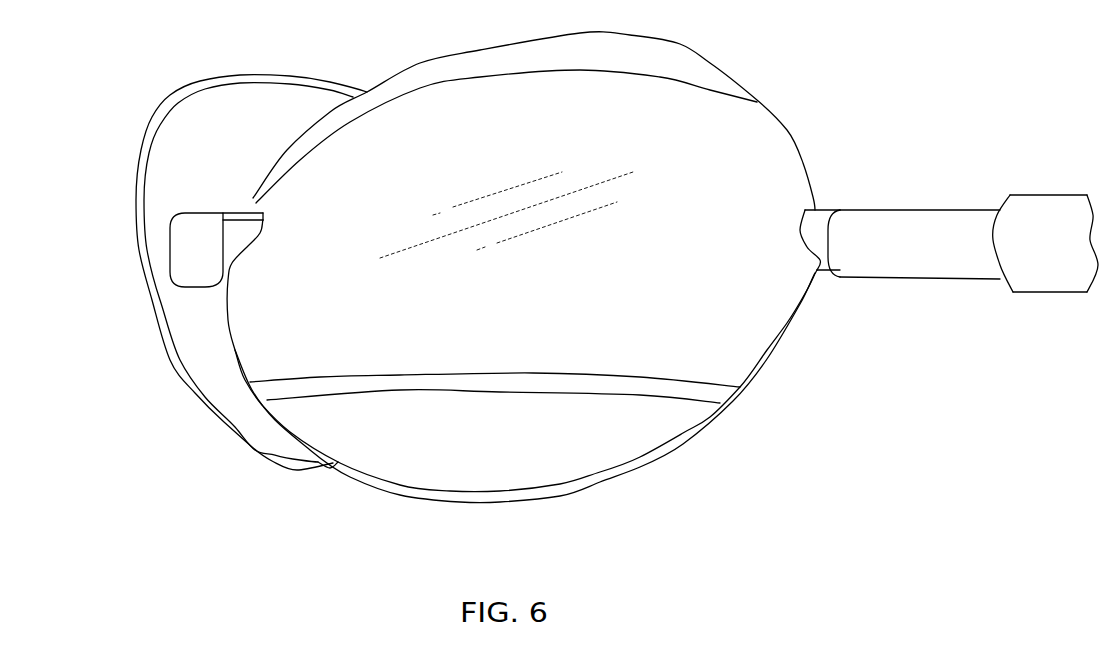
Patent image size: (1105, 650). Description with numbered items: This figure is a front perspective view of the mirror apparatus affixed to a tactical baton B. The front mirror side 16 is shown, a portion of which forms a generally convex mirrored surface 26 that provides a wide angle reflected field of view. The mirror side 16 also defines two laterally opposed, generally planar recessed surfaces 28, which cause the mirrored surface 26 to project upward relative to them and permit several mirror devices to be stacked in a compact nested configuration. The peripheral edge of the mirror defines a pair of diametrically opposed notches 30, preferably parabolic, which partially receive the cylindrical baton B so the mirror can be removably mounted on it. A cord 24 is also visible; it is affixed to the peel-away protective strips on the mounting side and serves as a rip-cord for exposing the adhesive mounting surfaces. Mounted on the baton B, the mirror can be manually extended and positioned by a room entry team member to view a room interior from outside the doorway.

The front mirror side 16 is at (766, 147).
The cord 24 is at (173, 360).
The convex mirrored surface 26 is at (510, 135).
The recessed surfaces 28 is at (605, 61).
The notches 30 is at (256, 211).
The baton B is at (955, 210).